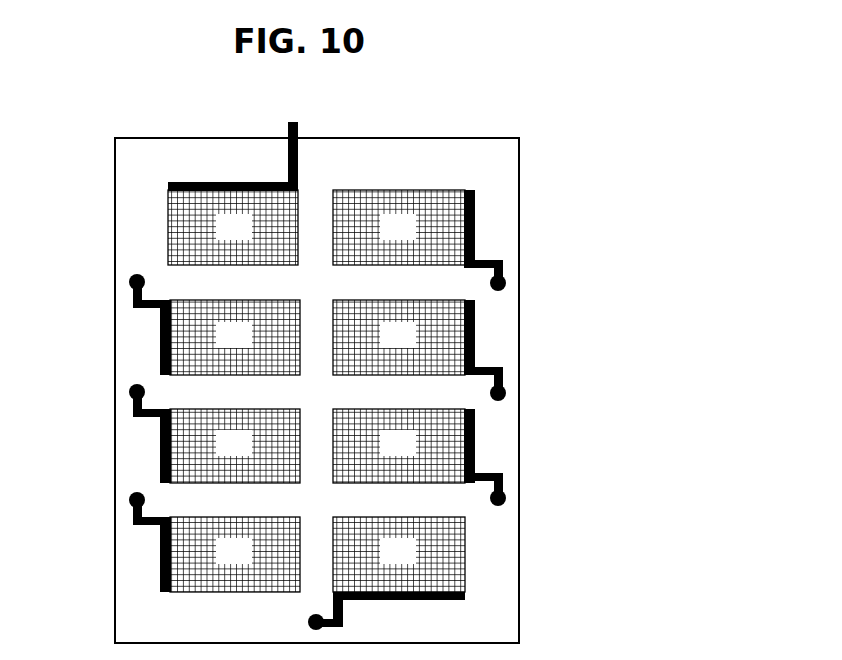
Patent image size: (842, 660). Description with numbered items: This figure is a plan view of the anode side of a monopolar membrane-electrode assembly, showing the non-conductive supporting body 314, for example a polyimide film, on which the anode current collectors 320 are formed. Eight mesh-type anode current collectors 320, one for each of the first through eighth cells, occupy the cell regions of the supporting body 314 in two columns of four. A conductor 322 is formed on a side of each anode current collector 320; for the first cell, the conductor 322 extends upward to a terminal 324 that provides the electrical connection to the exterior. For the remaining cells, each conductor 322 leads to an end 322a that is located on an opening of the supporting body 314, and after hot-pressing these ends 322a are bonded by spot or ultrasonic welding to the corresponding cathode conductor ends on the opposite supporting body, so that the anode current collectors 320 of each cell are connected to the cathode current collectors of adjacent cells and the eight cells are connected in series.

The supporting body 314 is at (463, 139).
The anode current collector 320 is at (168, 227).
The conductor 322 is at (197, 182).
The end of conductor 322a is at (129, 282).
The terminal 324 is at (294, 121).